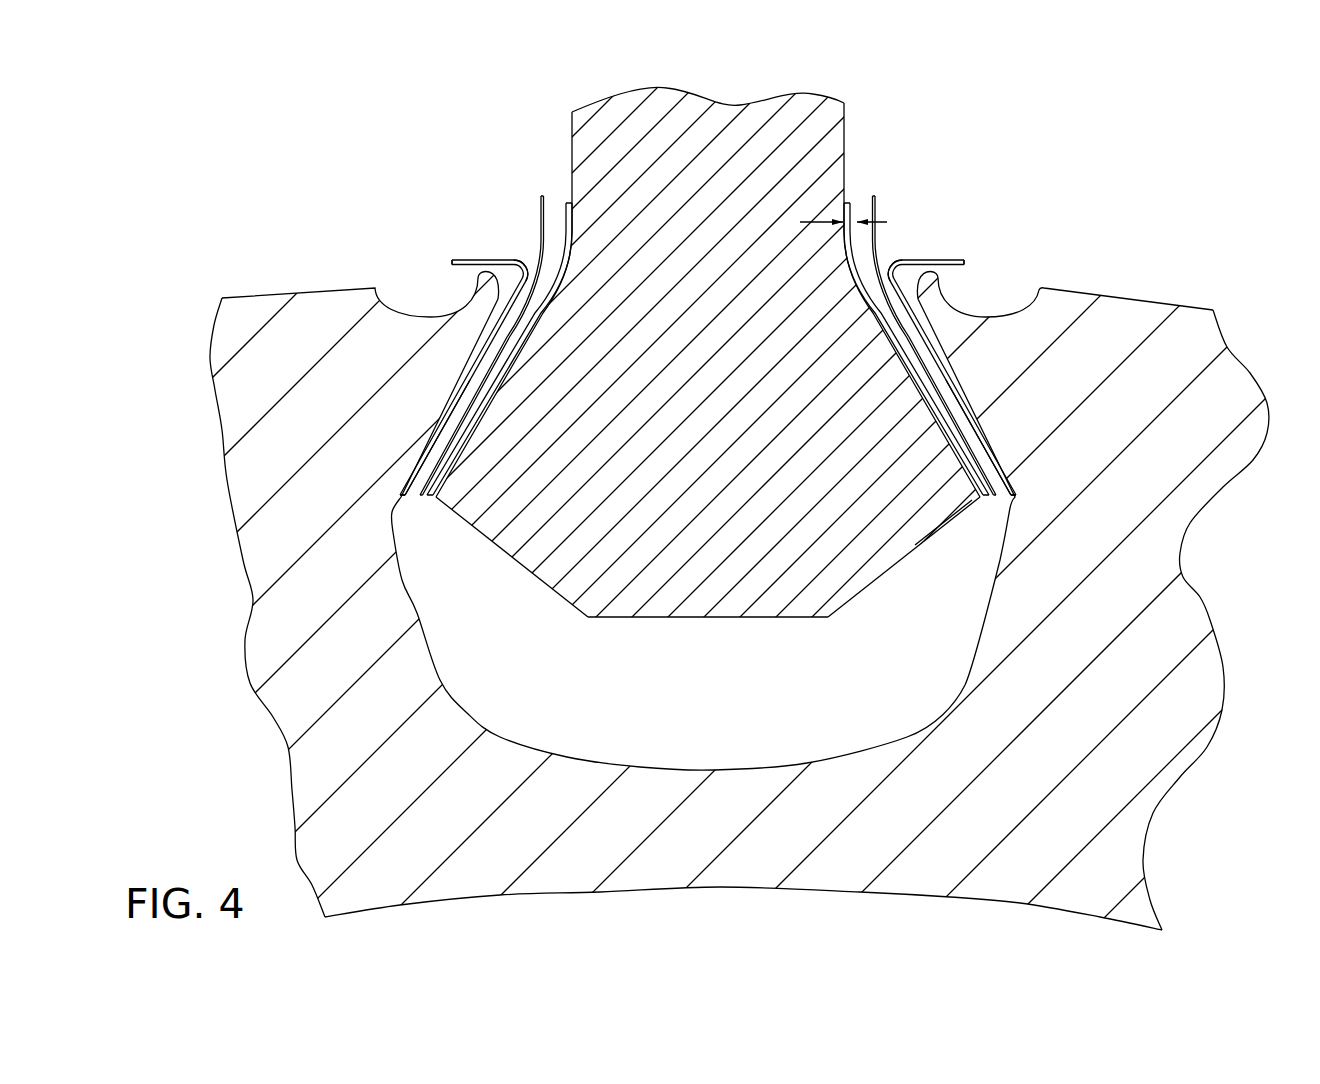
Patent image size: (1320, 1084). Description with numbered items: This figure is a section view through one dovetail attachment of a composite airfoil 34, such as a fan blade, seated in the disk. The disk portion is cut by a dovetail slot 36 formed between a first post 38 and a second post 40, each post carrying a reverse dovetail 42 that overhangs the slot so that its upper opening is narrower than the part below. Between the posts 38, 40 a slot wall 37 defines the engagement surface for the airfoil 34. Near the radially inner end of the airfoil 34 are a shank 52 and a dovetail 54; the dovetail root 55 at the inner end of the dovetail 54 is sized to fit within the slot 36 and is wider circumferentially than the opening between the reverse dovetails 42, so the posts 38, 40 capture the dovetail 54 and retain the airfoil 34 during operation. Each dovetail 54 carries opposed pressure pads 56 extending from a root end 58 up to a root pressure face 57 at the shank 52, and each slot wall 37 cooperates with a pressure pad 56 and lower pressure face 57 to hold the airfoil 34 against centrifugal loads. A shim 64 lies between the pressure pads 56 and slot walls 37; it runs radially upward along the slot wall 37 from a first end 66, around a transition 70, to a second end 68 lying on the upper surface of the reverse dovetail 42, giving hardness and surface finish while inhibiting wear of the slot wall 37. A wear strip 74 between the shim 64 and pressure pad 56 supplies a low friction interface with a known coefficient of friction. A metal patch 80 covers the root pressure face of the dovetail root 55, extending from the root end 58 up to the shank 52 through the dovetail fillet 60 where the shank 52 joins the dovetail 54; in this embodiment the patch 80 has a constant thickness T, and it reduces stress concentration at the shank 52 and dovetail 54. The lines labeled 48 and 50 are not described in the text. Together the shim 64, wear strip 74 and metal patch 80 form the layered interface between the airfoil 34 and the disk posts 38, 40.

The airfoil 34 is at (1162, 150).
The dovetail slot 36 is at (550, 736).
The slot wall 37 is at (970, 670).
The first post 38 is at (313, 690).
The second post 40 is at (1163, 633).
The reverse dovetail 42 is at (322, 312).
The blade root 48 is at (846, 143).
The first side of blade root 50 is at (571, 113).
The shank 52 is at (857, 94).
The dovetail 54 is at (558, 567).
The dovetail root 55 is at (698, 618).
The pressure pad 56 is at (508, 410).
The root pressure face 57 is at (904, 557).
The root end 58 is at (427, 500).
The dovetail fillet 60 is at (734, 368).
The shim 64 is at (450, 250).
The first end 66 is at (393, 520).
The second end 68 is at (452, 263).
The transition 70 is at (526, 258).
The wear strip 74 is at (541, 214).
The metal patch 80 is at (567, 203).
The thickness T is at (882, 222).